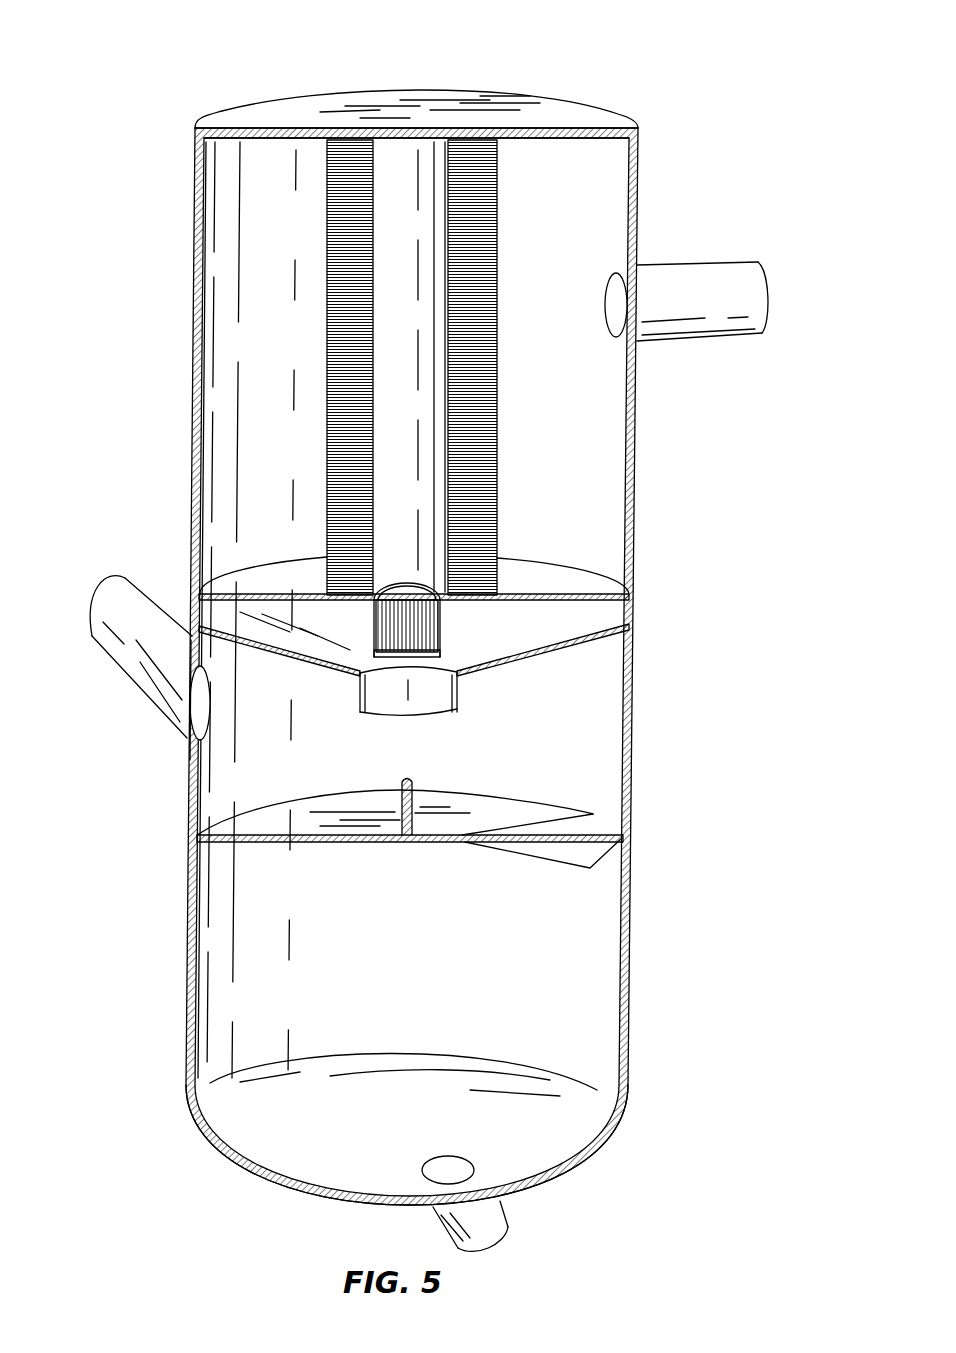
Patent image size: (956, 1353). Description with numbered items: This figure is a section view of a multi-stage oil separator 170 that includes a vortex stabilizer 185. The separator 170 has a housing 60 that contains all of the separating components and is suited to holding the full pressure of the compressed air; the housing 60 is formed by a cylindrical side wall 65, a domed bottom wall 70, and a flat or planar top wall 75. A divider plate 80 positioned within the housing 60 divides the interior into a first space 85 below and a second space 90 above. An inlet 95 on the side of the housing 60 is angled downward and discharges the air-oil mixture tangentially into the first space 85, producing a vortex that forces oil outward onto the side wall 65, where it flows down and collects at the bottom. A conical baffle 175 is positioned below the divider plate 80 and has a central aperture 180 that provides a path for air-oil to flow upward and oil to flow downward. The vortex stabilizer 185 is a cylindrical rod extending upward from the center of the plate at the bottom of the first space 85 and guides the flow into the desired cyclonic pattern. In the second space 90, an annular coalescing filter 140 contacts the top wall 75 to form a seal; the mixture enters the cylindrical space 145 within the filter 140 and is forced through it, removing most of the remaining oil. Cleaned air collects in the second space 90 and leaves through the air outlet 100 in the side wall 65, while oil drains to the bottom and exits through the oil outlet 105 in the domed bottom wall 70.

The housing 60 is at (176, 948).
The cylindrical side wall 65 is at (190, 778).
The bottom wall 70 is at (233, 1166).
The top wall 75 is at (262, 105).
The divider plate 80 is at (267, 567).
The first space 85 is at (600, 780).
The second space 90 is at (596, 441).
The inlet 95 is at (134, 596).
The air outlet 100 is at (707, 270).
The oil outlet 105 is at (494, 1216).
The coalescing filter 140 is at (478, 229).
The cylindrical space 145 is at (405, 180).
The separator 170 is at (695, 105).
The conical baffle 175 is at (583, 645).
The central aperture 180 is at (440, 703).
The vortex stabilizer 185 is at (407, 778).